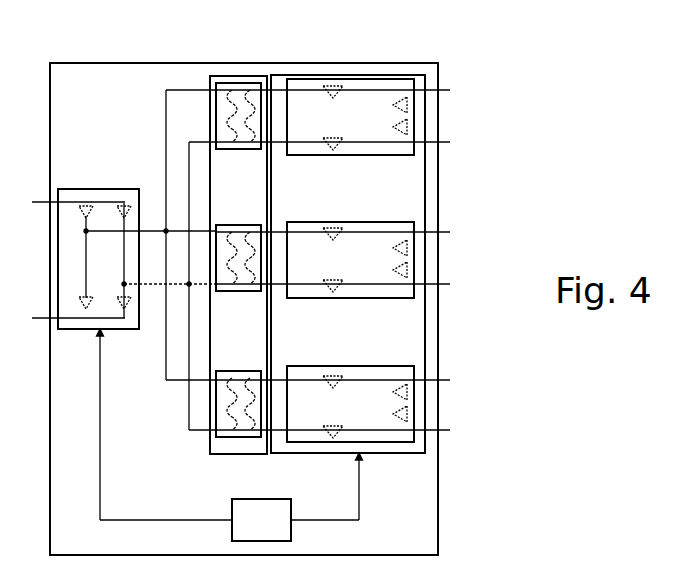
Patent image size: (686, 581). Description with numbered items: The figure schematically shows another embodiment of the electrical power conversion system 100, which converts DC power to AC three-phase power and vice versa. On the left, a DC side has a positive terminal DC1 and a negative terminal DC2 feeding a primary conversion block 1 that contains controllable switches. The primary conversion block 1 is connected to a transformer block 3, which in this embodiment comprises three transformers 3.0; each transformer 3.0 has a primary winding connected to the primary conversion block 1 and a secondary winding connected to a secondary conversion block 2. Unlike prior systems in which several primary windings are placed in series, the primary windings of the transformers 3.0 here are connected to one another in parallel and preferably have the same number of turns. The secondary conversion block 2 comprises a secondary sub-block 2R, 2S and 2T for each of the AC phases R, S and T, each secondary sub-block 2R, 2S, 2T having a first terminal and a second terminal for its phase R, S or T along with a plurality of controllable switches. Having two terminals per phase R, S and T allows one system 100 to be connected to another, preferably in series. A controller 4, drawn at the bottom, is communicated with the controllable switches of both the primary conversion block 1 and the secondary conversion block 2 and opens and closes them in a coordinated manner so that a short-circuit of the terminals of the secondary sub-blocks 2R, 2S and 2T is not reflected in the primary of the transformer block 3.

The electrical power conversion system 100 is at (113, 60).
The primary conversion block 1 is at (95, 188).
The transformer block 3 is at (255, 76).
The transformer 3.0 is at (232, 83).
The secondary conversion block 2 is at (340, 75).
The secondary sub-block 2R is at (405, 78).
The secondary sub-block 2S is at (410, 222).
The secondary sub-block 2T is at (408, 443).
The controller 4 is at (230, 435).
The positive terminal DC1 is at (68, 191).
The negative terminal DC2 is at (68, 307).
The AC phase R is at (453, 116).
The AC phase S is at (451, 258).
The AC phase T is at (452, 404).